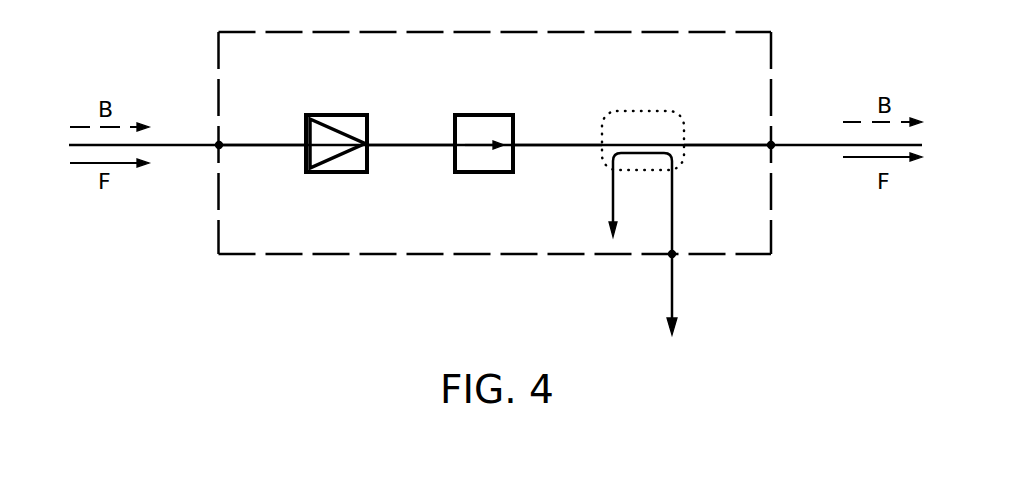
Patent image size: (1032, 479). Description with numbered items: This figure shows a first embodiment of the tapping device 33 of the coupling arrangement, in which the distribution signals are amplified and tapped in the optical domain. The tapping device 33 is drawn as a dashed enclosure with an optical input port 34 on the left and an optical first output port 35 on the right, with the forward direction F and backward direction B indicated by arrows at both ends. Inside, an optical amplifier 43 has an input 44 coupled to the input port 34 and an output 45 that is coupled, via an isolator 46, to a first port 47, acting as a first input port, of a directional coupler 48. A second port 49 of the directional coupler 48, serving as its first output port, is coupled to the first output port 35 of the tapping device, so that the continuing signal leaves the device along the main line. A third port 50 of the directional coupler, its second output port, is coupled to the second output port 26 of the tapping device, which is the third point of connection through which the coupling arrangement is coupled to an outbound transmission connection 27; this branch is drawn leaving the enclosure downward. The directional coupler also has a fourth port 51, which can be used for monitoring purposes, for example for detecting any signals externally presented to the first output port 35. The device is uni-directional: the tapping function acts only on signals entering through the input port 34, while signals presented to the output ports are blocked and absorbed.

The tapping device 33 is at (330, 255).
The optical input port 34 is at (217, 149).
The optical first output port 35 is at (773, 148).
The optical amplifier 43 is at (335, 112).
The input 44 is at (261, 142).
The output 45 is at (410, 142).
The isolator 46 is at (484, 111).
The first port 47 is at (559, 142).
The directional coupler 48 is at (644, 109).
The second port 49 is at (727, 141).
The third port 50 is at (675, 200).
The fourth port 51 is at (610, 200).
The second output port 26 is at (675, 257).
The outbound transmission connection 27 is at (675, 303).